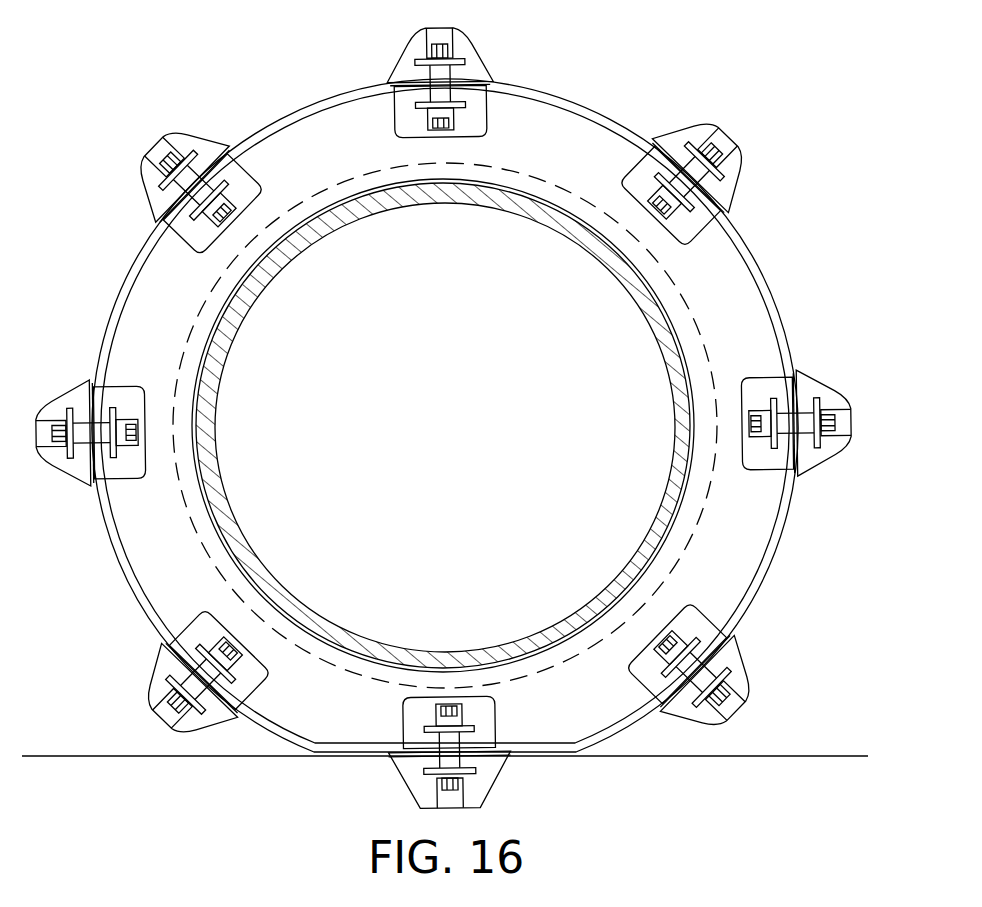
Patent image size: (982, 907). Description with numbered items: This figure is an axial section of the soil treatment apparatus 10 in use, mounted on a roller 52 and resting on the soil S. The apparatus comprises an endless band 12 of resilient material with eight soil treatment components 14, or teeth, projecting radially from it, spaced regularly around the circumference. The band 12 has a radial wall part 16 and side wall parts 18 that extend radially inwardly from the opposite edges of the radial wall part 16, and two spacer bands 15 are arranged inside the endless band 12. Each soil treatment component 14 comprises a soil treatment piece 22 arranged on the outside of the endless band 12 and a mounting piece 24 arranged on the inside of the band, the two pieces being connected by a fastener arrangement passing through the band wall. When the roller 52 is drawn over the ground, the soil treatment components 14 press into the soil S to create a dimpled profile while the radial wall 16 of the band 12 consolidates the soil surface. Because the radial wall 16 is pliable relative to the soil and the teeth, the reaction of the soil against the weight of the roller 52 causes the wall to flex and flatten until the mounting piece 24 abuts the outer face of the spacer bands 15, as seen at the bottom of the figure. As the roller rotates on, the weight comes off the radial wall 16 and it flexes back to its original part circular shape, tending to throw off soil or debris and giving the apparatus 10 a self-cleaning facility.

The soil treatment apparatus 10 is at (646, 97).
The endless band 12 is at (465, 415).
The soil treatment component 14 is at (746, 658).
The spacer band 15 is at (690, 400).
The radial wall part 16 is at (772, 505).
The side wall part 18 is at (760, 312).
The soil treatment piece 22 is at (744, 170).
The mounting piece 24 is at (716, 236).
The roller 52 is at (638, 302).
The soil S is at (820, 756).